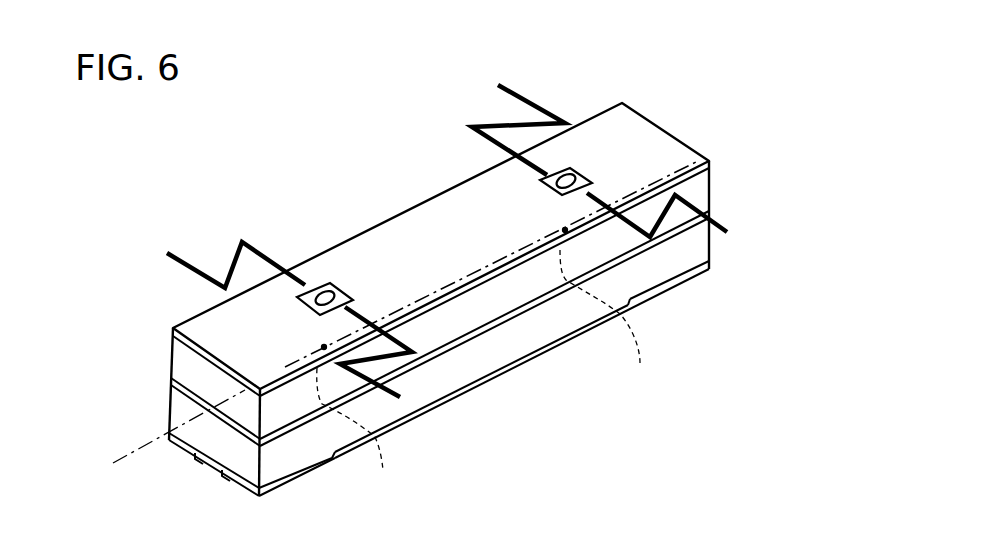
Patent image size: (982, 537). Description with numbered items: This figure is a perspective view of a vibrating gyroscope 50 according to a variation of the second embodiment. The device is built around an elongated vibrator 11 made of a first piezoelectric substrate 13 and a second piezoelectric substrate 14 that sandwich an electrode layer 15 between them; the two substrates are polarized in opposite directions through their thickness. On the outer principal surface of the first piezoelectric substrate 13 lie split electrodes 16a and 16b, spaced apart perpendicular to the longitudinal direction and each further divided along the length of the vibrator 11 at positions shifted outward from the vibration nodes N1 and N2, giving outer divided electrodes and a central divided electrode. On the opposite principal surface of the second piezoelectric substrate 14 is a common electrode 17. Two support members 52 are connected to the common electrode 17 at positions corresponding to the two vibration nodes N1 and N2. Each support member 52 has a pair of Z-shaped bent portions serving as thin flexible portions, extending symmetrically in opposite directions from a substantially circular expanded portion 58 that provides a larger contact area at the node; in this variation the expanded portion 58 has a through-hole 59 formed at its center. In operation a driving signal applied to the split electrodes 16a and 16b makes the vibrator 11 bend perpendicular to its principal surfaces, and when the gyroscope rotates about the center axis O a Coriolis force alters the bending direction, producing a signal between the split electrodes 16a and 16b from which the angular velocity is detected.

The vibrating gyroscope 50 is at (716, 66).
The vibrator 11 is at (692, 134).
The center axis O is at (718, 152).
The support member 52 is at (187, 256).
The expanded portion 58 is at (298, 287).
The through-hole 59 is at (548, 176).
The common electrode 17 is at (227, 325).
The second piezoelectric substrate 14 is at (403, 282).
The electrode layer 15 is at (171, 377).
The first piezoelectric substrate 13 is at (192, 417).
The split electrode 16a is at (463, 393).
The split electrode 16b is at (183, 452).
The vibration node N1 is at (368, 426).
The vibration node N2 is at (621, 316).